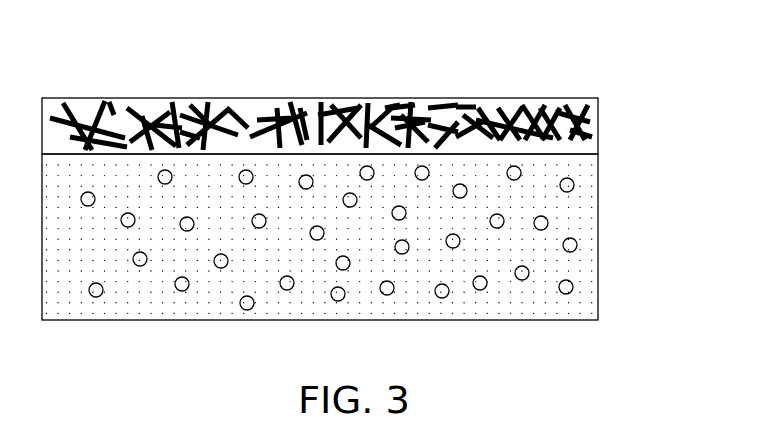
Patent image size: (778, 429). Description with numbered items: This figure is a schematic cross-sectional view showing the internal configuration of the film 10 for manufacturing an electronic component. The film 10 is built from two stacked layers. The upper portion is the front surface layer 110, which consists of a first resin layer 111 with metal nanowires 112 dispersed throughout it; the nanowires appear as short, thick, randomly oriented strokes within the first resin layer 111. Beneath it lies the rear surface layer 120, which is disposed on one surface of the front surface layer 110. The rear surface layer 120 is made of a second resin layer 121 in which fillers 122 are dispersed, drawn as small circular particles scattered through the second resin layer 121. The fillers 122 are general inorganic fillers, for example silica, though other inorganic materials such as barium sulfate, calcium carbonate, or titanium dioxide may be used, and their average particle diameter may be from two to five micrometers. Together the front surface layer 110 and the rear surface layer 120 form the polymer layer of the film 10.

The film for manufacturing an electronic component 10 is at (531, 47).
The front surface layer 110 is at (386, 121).
The first resin layer 111 is at (589, 143).
The metal nanowires 112 is at (568, 110).
The rear surface layer 120 is at (386, 237).
The second resin layer 121 is at (589, 218).
The fillers 122 is at (577, 245).